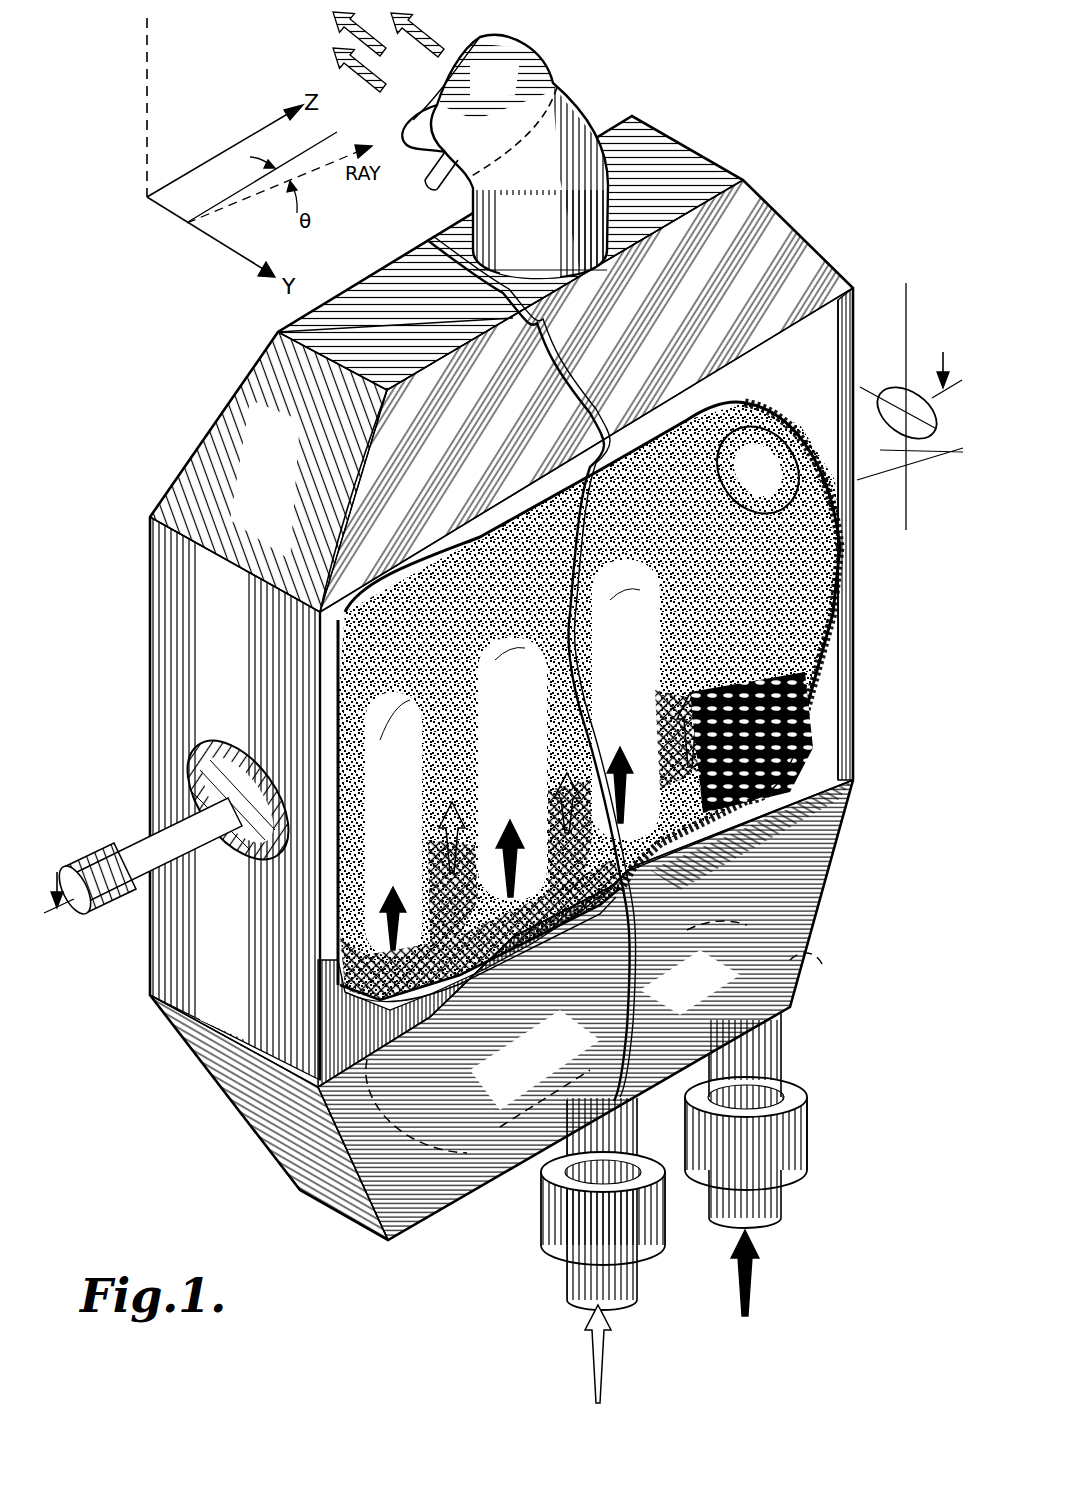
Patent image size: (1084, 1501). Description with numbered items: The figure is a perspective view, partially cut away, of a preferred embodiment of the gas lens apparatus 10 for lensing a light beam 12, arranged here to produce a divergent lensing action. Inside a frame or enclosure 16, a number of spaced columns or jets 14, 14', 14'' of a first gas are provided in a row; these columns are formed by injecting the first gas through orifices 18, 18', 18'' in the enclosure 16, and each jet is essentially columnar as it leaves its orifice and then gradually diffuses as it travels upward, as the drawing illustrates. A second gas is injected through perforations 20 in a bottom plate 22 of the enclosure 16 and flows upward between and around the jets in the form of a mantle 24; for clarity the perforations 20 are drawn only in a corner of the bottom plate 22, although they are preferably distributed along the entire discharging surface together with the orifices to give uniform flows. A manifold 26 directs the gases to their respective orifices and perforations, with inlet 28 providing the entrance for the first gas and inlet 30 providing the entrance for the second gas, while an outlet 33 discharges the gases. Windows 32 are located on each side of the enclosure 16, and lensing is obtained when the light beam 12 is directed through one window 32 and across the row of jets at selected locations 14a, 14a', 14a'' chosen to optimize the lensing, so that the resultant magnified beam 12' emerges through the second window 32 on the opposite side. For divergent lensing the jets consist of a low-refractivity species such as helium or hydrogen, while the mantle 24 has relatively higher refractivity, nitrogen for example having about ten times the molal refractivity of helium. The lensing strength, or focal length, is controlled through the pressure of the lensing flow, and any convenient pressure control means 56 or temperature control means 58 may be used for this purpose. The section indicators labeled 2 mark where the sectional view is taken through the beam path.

The apparatus 10 is at (132, 551).
The light beam 12 is at (147, 847).
The magnified beam 12' is at (910, 406).
The gas jet 14 is at (393, 824).
The selected location 14a is at (394, 763).
The gas jet 14' is at (512, 769).
The selected location 14a' is at (519, 703).
The gas jet 14'' is at (626, 700).
The selected location 14a'' is at (627, 641).
The enclosure 16 is at (161, 647).
The orifice 18 is at (478, 860).
The orifice 18' is at (741, 850).
The orifice 18'' is at (747, 861).
The perforations 20 is at (813, 715).
The bottom plate 22 is at (793, 757).
The mantle 24 is at (793, 627).
The manifold 26 is at (822, 964).
The inlet 28 is at (778, 1046).
The inlet 30 is at (557, 1144).
The window 32 is at (197, 763).
The outlet 33 is at (590, 113).
The pressure control means 56 is at (553, 83).
The temperature control means 58 is at (563, 1238).
The section line 2 is at (503, 645).